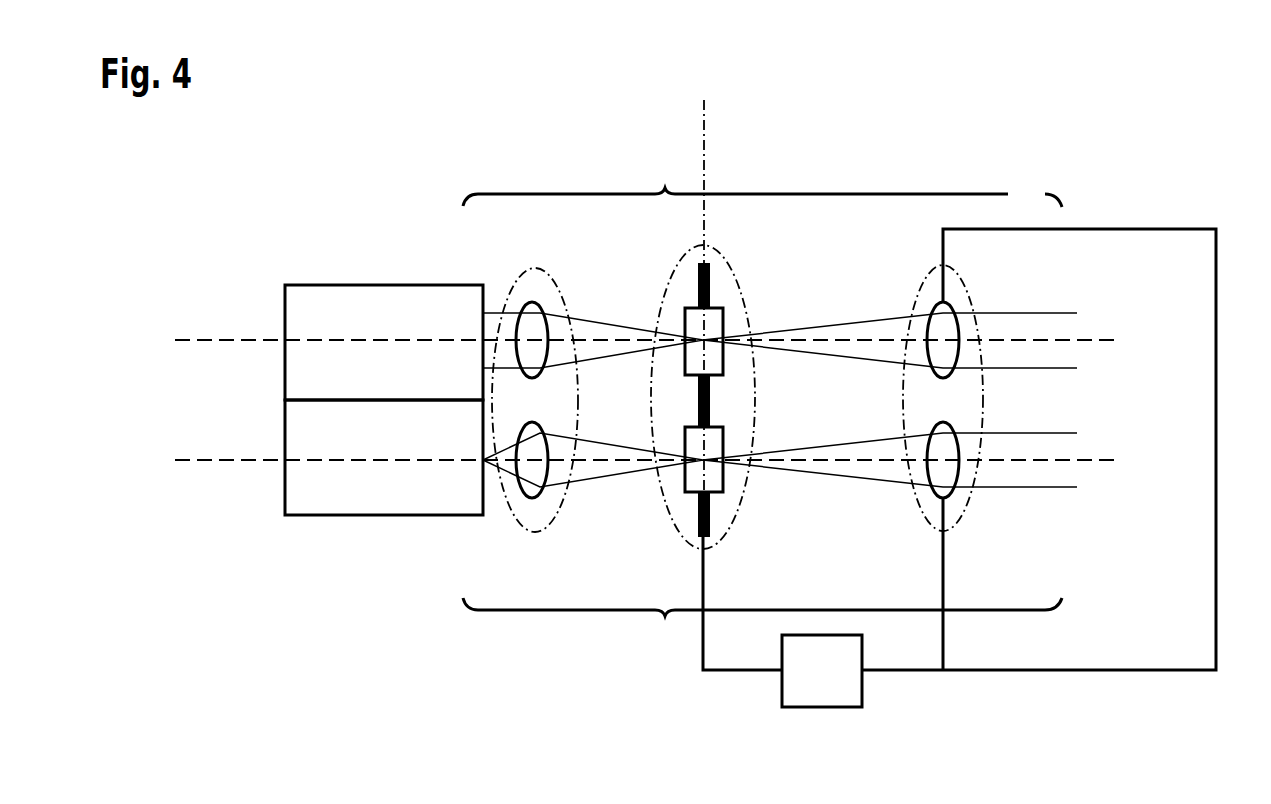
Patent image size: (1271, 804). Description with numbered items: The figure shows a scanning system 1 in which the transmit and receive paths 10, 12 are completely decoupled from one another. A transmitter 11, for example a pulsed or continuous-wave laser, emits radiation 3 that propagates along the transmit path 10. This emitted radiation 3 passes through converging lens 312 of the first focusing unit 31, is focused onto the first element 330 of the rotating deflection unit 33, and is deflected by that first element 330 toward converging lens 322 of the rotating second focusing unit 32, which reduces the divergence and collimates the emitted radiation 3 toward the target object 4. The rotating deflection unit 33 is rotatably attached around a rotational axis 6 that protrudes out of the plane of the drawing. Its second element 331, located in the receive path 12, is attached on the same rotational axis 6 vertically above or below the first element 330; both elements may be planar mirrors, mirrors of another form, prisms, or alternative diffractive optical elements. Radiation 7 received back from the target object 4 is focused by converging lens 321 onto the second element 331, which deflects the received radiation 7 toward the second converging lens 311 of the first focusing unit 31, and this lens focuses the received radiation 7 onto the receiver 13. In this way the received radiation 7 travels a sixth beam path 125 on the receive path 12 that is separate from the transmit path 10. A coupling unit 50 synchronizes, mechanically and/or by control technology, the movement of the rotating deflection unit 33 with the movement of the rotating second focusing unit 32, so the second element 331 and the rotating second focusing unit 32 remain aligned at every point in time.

The scanning system 1 is at (248, 197).
The emitted radiation 3 is at (500, 318).
The target object 4 is at (1132, 342).
The rotational axis 6 is at (706, 112).
The received radiation 7 is at (1072, 470).
The transmit path 10 is at (665, 188).
The transmitter 11 is at (292, 316).
The receive path 12 is at (665, 616).
The receiver 13 is at (292, 488).
The first focusing unit 31 is at (555, 268).
The rotating second focusing unit 32 is at (953, 268).
The rotating deflection unit 33 is at (735, 272).
The coupling unit 50 is at (820, 683).
The sixth beam path 125 is at (590, 468).
The second converging lens of first focusing unit 311 is at (532, 500).
The converging lens of first focusing unit 312 is at (545, 305).
The converging lens 321 is at (948, 500).
The converging lens of rotating second focusing unit 322 is at (950, 304).
The first element 330 is at (725, 316).
The second element 331 is at (723, 485).